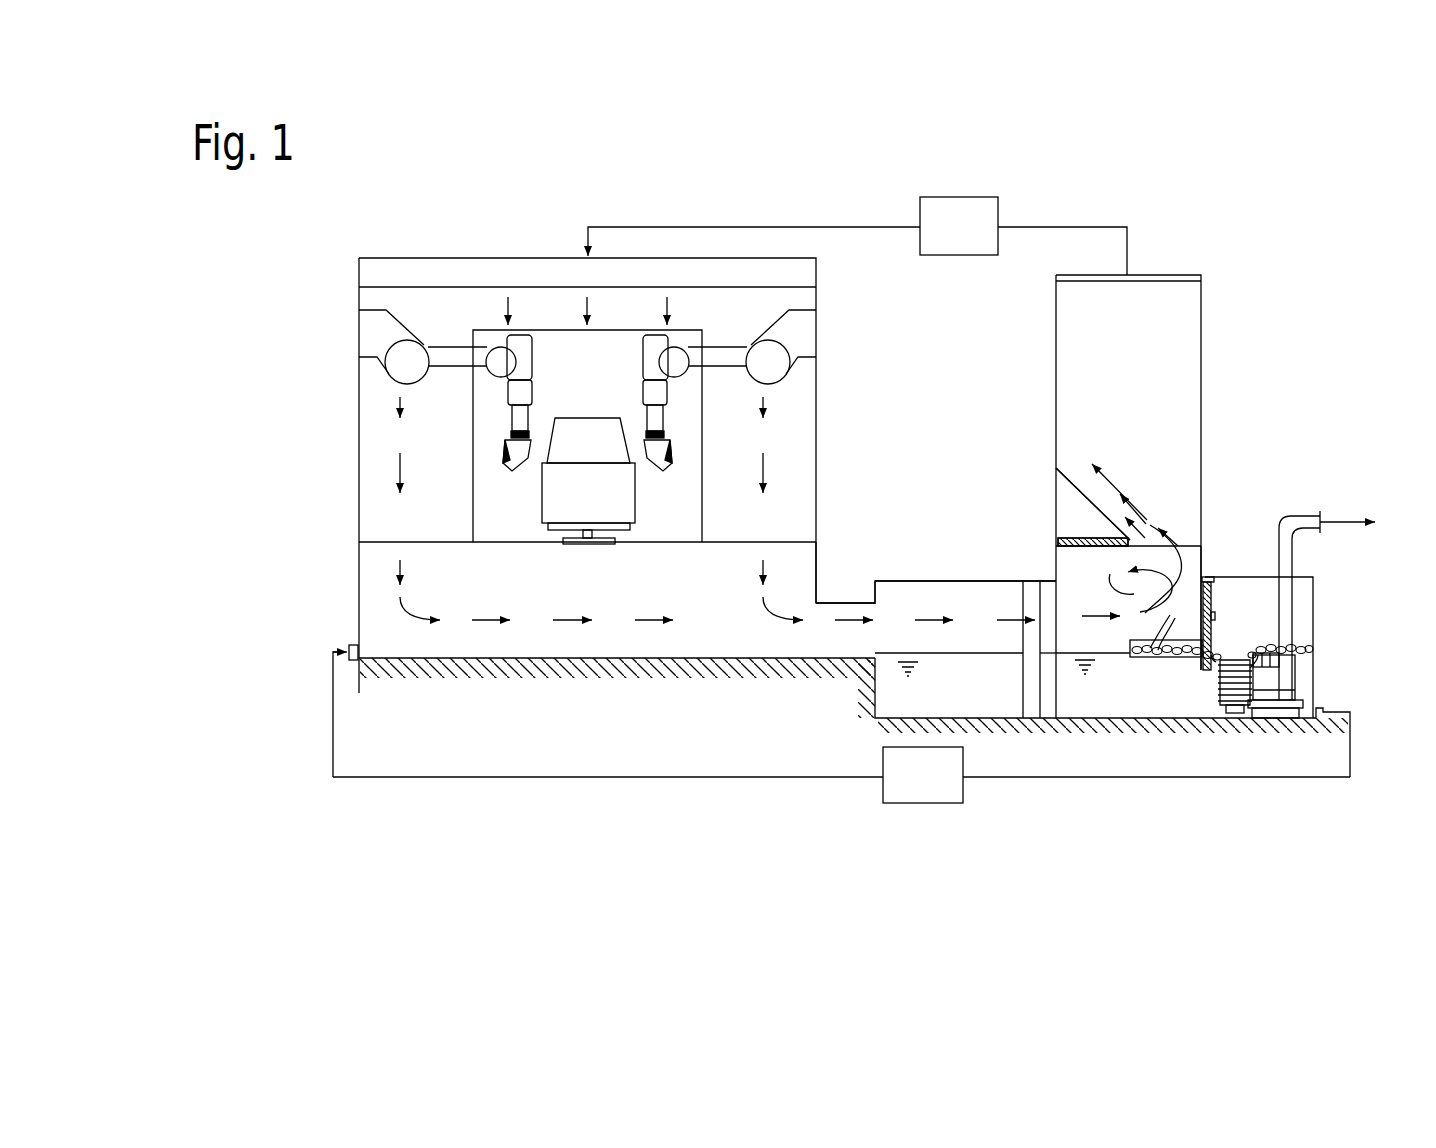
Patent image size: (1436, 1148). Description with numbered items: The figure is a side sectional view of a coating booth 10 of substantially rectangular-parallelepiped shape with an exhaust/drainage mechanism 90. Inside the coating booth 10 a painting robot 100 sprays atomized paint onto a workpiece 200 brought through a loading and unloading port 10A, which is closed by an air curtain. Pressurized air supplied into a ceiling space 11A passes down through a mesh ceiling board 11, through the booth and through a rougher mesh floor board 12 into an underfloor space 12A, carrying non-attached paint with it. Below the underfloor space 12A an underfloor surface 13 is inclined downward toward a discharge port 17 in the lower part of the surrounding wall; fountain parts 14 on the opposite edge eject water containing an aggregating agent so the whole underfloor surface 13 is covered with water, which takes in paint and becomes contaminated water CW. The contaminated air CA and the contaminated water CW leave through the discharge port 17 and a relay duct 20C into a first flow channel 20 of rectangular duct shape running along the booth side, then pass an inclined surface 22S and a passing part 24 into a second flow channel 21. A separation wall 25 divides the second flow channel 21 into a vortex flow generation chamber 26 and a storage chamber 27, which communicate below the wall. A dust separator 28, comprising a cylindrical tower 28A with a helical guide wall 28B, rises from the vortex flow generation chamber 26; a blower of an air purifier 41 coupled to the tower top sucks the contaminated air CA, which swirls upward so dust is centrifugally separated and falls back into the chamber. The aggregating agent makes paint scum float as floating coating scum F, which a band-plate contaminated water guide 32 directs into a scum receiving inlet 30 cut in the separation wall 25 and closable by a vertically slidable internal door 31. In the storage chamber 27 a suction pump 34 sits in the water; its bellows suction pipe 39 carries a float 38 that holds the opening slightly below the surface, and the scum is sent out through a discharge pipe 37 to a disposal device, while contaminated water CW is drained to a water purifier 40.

The coating booth 10 is at (408, 256).
The ceiling space 11A is at (375, 272).
The ceiling board 11 is at (378, 288).
The painting robot 100 is at (378, 340).
The loading and unloading port 10A is at (474, 412).
The workpiece 200 is at (637, 498).
The floor board 12 is at (378, 543).
The underfloor space 12A is at (378, 588).
The underfloor surface 13 is at (385, 650).
The fountain parts 14 is at (350, 645).
The discharge port 17 is at (800, 590).
The relay duct 20C is at (845, 600).
The first flow channel 20 is at (905, 580).
The second flow channel 21 is at (1090, 703).
The inclined surface 22S is at (1032, 707).
The passing part 24 is at (1058, 702).
The vortex flow generation chamber 26 is at (1112, 668).
The exhaust/drainage mechanism 90 is at (1213, 432).
The dust separator 28 is at (972, 425).
The cylindrical tower 28A is at (1056, 466).
The helical guide wall 28B is at (1075, 485).
The air purifier 41 is at (957, 197).
The separation wall 25 is at (1208, 578).
The contaminated water guide 32 is at (1157, 658).
The scum receiving inlet 30 is at (1206, 672).
The storage chamber 27 is at (1300, 598).
The internal door 31 is at (1215, 578).
The suction pump 34 is at (1265, 685).
The discharge pipe 37 is at (1285, 654).
The suction pipe 39 is at (1238, 700).
The float 38 is at (1250, 690).
The floating coating scum F is at (1222, 624).
The water purifier 40 is at (921, 805).
The contaminated air CA is at (905, 628).
The contaminated water CW is at (897, 700).